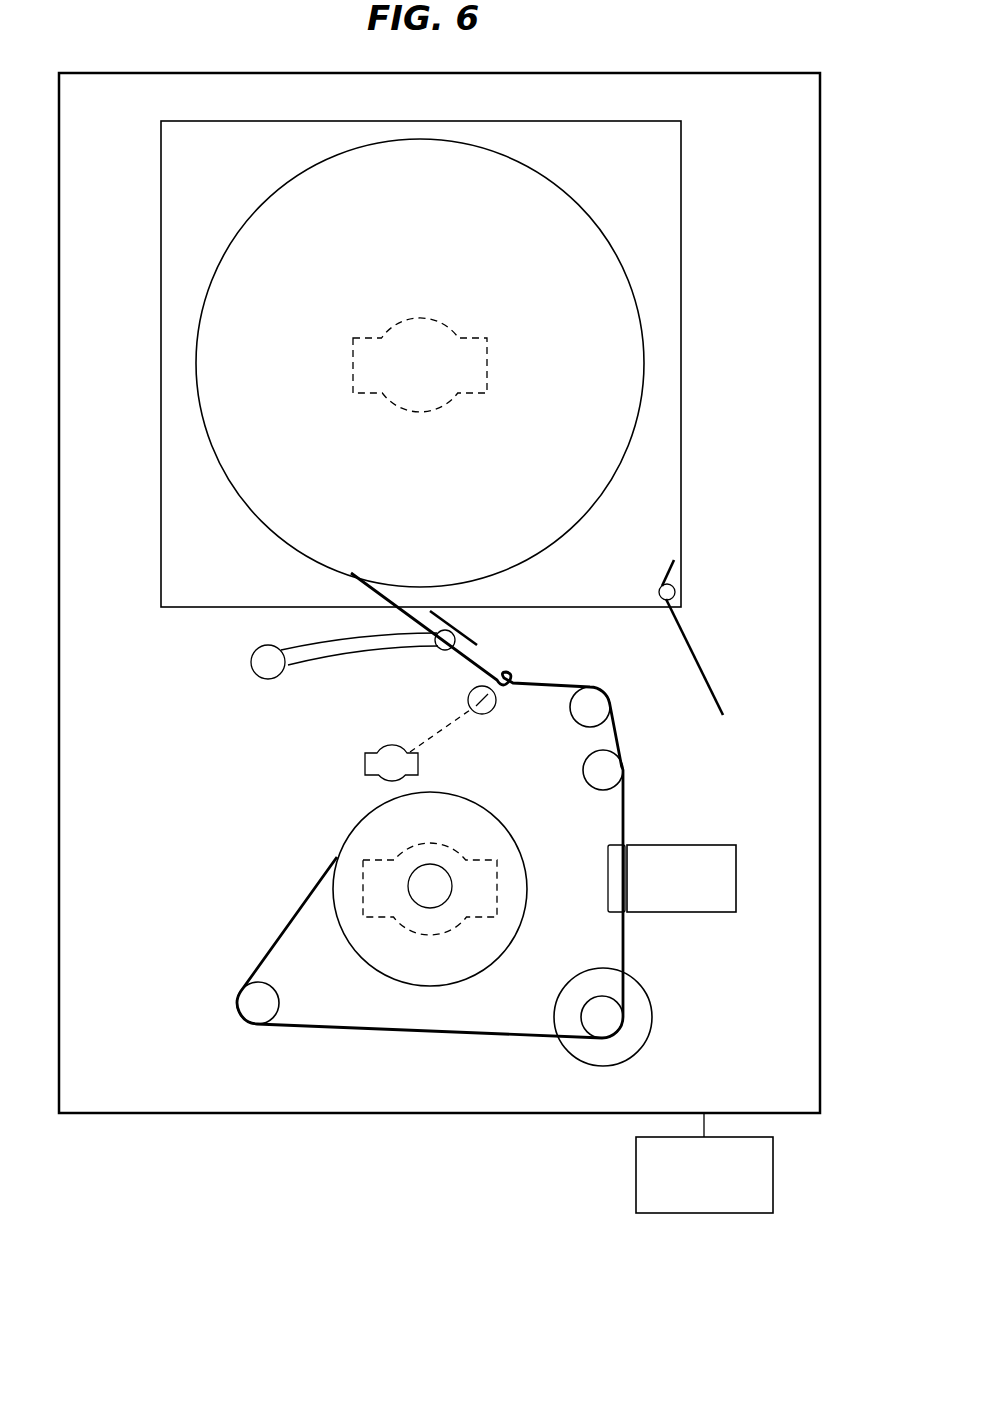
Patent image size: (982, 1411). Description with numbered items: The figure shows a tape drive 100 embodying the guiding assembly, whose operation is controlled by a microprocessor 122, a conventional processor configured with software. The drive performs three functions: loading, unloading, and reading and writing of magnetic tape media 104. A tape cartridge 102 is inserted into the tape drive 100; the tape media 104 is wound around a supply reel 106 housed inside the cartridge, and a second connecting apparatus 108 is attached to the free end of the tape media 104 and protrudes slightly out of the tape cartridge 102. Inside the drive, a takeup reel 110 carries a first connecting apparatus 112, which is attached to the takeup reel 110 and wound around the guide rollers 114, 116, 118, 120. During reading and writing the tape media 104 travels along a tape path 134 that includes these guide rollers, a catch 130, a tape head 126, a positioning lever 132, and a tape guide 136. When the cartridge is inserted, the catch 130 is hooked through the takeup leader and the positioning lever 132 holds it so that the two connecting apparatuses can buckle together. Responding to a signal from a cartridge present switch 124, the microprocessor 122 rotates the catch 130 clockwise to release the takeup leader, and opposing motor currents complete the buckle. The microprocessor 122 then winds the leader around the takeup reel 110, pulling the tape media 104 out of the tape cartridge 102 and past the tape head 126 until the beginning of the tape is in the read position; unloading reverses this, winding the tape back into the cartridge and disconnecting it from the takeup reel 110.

The tape drive 100 is at (820, 592).
The tape cartridge 102 is at (682, 465).
The magnetic tape media 104 is at (586, 512).
The supply reel 106 is at (420, 411).
The second connecting apparatus 108 is at (405, 617).
The takeup reel 110 is at (458, 982).
The first connecting apparatus 112 is at (484, 658).
The guide roller 114 is at (247, 1012).
The guide roller 116 is at (623, 1030).
The guide roller 118 is at (622, 770).
The guide roller 120 is at (609, 703).
The microprocessor 122 is at (773, 1175).
The cartridge present switch 124 is at (695, 652).
The tape head 126 is at (703, 843).
The catch 130 is at (482, 714).
The positioning lever 132 is at (328, 655).
The tape path 134 is at (623, 957).
The tape guide 136 is at (613, 913).